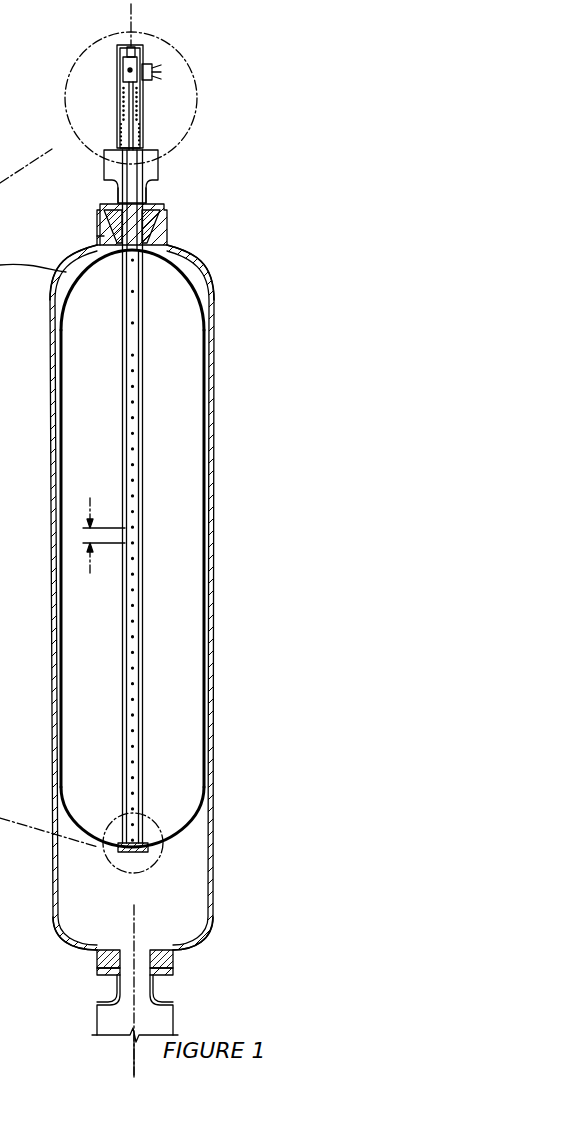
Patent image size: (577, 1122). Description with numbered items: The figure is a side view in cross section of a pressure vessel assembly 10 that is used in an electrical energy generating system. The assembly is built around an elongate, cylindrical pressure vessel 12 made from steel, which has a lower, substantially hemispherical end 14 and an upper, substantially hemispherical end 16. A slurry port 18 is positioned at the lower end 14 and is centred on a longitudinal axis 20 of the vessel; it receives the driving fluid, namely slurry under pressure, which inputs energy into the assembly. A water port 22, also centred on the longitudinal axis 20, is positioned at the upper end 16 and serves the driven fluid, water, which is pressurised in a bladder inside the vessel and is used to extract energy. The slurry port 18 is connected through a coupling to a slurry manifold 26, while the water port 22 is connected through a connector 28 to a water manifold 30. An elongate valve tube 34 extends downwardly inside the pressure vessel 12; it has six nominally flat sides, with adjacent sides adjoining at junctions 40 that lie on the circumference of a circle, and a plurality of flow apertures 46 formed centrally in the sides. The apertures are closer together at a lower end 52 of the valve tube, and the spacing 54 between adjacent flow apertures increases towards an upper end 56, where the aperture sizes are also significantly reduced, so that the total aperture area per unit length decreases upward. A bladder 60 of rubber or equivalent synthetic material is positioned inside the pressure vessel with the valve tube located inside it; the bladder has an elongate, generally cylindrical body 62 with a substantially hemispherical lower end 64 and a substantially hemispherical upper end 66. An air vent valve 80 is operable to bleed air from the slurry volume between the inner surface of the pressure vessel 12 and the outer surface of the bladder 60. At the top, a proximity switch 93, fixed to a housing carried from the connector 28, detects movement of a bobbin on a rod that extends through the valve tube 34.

The pressure vessel assembly 10 is at (205, 135).
The pressure vessel 12 is at (212, 513).
The lower end 14 is at (193, 943).
The upper end 16 is at (197, 253).
The slurry port 18 is at (133, 977).
The longitudinal axis 20 is at (133, 1058).
The water port 22 is at (142, 223).
The slurry manifold 26 is at (165, 999).
The connector 28 is at (155, 193).
The water manifold 30 is at (165, 162).
The valve tube 34 is at (142, 687).
The junctions 40 is at (143, 773).
The flow apertures 46 is at (142, 748).
The lower end of the valve tube 52 is at (162, 818).
The spacing 54 is at (92, 535).
The upper end of the valve tube 56 is at (143, 277).
The bladder 60 is at (207, 567).
The elongate body 62 is at (205, 617).
The lower end of the bladder 64 is at (182, 830).
The upper end of the bladder 66 is at (207, 302).
The air vent valve 80 is at (97, 227).
The proximity switch 93 is at (157, 72).